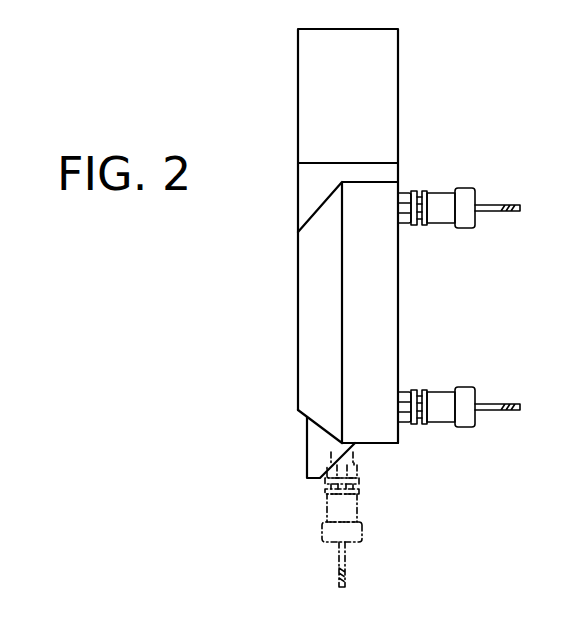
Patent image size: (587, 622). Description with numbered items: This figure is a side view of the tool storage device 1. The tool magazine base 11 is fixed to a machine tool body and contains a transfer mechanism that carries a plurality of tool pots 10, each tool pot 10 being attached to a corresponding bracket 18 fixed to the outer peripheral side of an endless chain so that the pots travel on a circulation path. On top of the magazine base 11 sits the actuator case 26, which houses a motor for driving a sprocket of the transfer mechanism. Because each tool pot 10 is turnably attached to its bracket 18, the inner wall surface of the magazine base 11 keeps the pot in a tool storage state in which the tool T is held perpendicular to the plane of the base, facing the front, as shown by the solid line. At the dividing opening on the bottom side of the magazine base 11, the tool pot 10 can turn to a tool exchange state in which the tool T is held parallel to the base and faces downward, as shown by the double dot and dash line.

The tool storage device 1 is at (277, 431).
The tool pot 10 is at (400, 423).
The tool magazine base 11 is at (393, 312).
The bracket 18 is at (400, 392).
The actuator case 26 is at (387, 123).
The tool T is at (465, 427).